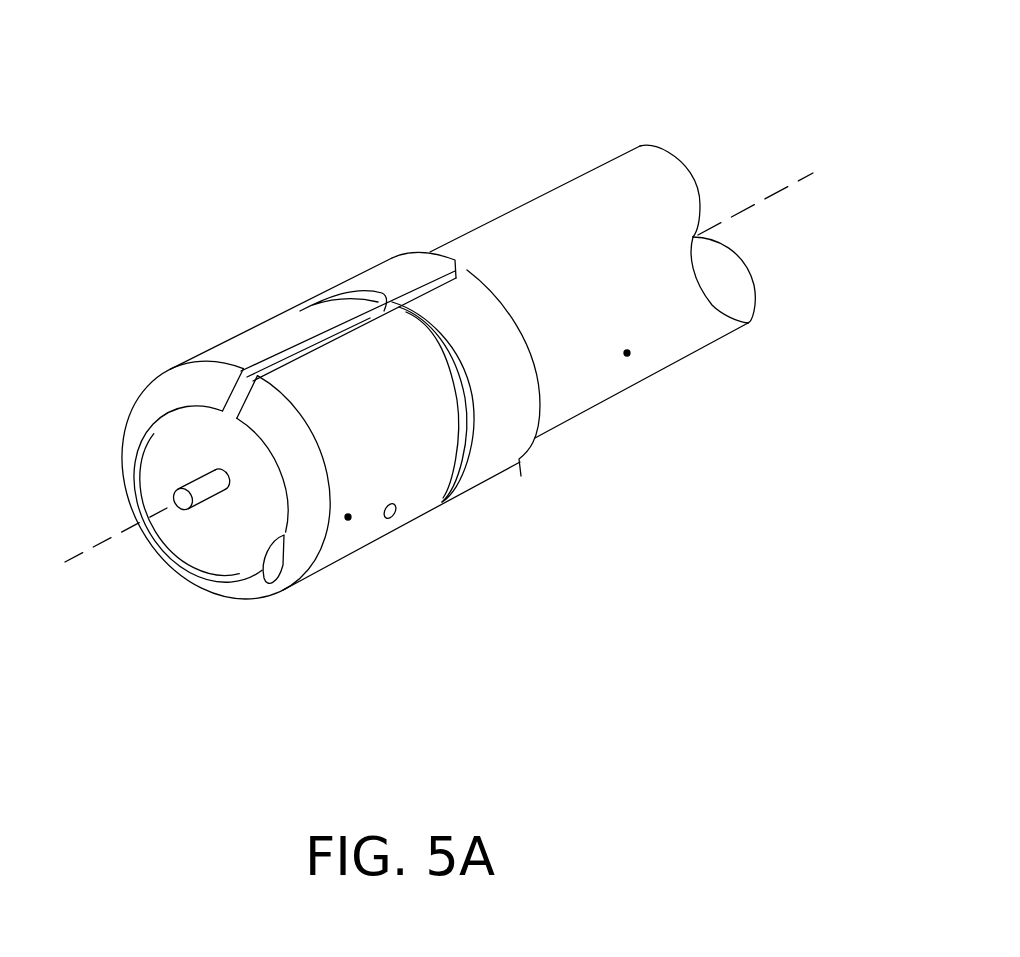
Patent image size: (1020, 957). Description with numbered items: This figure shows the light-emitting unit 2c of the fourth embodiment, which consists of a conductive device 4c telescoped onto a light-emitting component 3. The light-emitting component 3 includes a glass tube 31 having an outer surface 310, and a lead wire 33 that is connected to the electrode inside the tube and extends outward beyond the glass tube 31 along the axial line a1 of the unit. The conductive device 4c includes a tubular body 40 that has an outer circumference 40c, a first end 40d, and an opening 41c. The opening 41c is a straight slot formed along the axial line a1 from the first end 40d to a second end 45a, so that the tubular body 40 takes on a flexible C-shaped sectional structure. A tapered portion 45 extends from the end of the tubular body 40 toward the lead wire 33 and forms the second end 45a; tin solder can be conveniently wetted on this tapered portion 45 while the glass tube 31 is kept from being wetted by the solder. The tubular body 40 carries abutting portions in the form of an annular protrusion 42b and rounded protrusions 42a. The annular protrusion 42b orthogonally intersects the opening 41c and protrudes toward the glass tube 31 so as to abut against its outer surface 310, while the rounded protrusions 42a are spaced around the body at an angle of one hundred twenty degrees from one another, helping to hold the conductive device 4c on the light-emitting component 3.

The light-emitting unit 2c is at (97, 84).
The conductive device 4c is at (245, 310).
The tapered portion 45 is at (166, 397).
The second end 45a is at (278, 533).
The lead wire 33 is at (174, 497).
The tubular body 40 is at (428, 525).
The first end 40d is at (388, 258).
The opening 41c is at (428, 253).
The outer circumference 40c is at (348, 517).
The rounded protrusion 42a is at (397, 518).
The annular protrusion 42b is at (472, 422).
The light-emitting component 3 is at (521, 188).
The glass tube 31 is at (625, 195).
The outer surface 310 is at (627, 353).
The axial line a1 is at (438, 362).